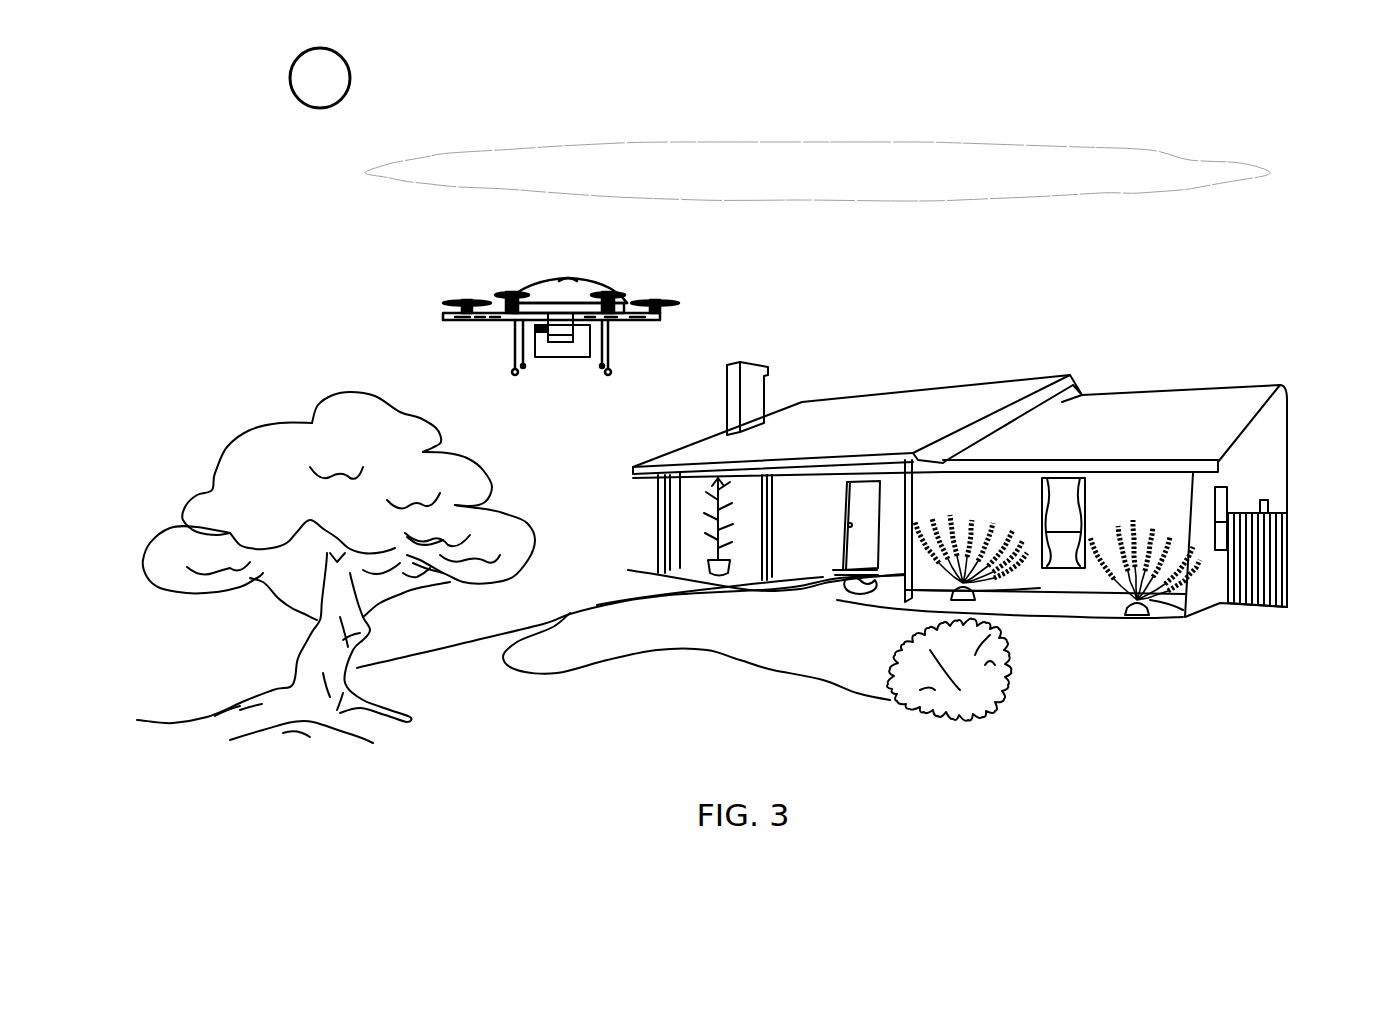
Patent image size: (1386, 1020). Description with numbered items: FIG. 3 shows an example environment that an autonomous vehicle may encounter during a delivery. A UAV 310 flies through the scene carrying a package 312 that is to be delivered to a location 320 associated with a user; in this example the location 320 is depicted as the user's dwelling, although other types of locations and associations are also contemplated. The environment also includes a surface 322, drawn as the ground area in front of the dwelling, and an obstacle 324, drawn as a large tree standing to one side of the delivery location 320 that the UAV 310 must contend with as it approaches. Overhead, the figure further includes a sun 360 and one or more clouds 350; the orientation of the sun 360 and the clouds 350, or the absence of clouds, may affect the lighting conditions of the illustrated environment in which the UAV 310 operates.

The UAV 310 is at (513, 350).
The package 312 is at (563, 357).
The location 320 is at (1110, 395).
The surface 322 is at (1117, 777).
The obstacle 324 is at (282, 423).
The clouds 350 is at (617, 146).
The sun 360 is at (353, 68).